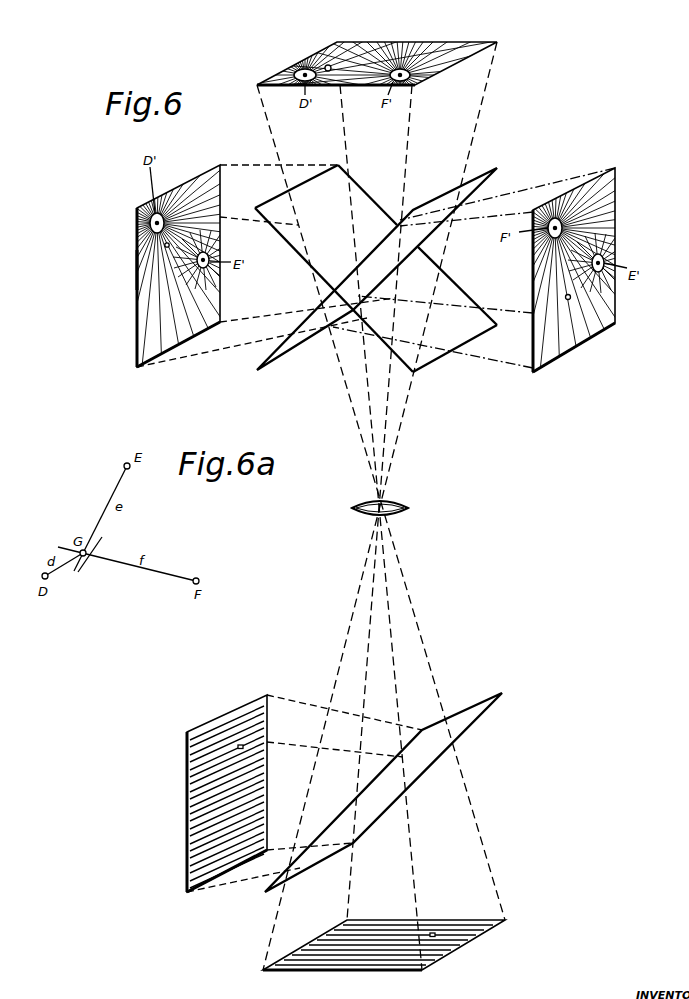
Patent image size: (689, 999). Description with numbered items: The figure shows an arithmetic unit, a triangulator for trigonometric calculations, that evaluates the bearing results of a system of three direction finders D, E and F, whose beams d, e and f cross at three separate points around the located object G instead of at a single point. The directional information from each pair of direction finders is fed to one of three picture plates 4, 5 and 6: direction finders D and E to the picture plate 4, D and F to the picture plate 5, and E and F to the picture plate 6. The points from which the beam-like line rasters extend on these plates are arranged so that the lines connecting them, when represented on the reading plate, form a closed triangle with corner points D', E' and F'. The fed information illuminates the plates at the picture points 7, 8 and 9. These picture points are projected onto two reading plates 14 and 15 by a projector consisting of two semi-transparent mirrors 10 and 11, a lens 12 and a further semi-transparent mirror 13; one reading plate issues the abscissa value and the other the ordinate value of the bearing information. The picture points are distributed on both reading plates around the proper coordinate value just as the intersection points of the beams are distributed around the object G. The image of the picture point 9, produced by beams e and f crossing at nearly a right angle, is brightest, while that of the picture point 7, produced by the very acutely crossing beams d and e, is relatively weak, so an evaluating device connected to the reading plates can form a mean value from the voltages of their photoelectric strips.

The picture plate 4 is at (137, 247).
The picture plate 5 is at (303, 66).
The picture plate 6 is at (615, 227).
The picture point 7 is at (137, 265).
The picture point 8 is at (327, 64).
The picture point 9 is at (570, 300).
The semi-transparent mirror 10 is at (295, 348).
The semi-transparent mirror 11 is at (430, 360).
The lens 12 is at (408, 503).
The semi-transparent mirror 13 is at (481, 704).
The reading plate 14 is at (187, 832).
The reading plate 15 is at (450, 952).